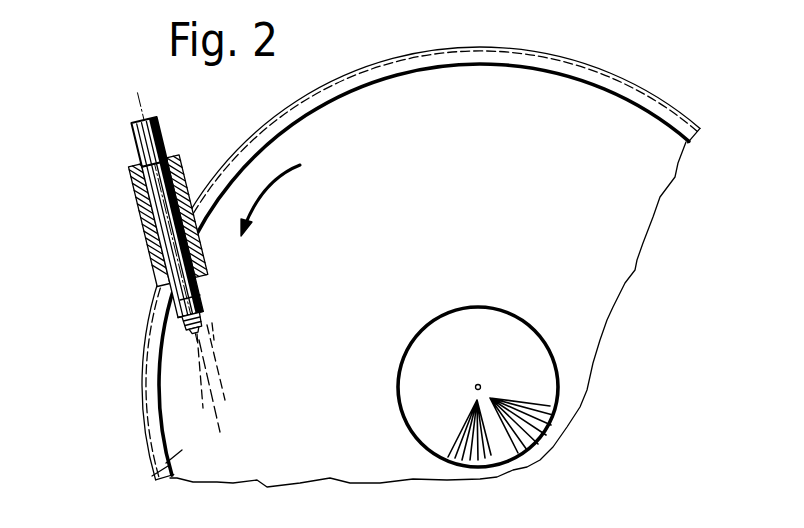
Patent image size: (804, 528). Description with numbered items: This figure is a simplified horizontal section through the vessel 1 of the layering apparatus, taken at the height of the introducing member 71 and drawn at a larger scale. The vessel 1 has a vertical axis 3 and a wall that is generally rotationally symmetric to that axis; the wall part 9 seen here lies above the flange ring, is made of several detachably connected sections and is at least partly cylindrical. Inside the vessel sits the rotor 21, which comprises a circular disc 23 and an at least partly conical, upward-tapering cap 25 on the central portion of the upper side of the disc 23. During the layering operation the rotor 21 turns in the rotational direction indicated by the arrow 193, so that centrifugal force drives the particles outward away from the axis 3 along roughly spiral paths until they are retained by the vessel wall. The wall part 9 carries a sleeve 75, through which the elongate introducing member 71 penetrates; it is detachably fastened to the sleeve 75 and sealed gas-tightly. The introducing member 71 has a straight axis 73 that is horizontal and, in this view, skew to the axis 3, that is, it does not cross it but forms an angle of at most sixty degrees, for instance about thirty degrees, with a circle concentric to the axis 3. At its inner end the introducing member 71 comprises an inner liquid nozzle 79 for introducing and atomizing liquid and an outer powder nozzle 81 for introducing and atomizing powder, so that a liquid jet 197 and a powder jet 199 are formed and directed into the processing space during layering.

The vessel 1 is at (441, 47).
The vertical axis 3 is at (478, 387).
The wall part 9 is at (680, 115).
The rotor 21 is at (162, 428).
The circular disc 23 is at (153, 478).
The cap 25 is at (557, 363).
The introducing member 71 is at (133, 146).
The axis 73 is at (143, 108).
The sleeve 75 is at (130, 203).
The liquid nozzle 79 is at (183, 333).
The powder nozzle 81 is at (167, 310).
The arrow 193 is at (272, 192).
The liquid jet 197 is at (197, 372).
The powder jet 199 is at (197, 384).